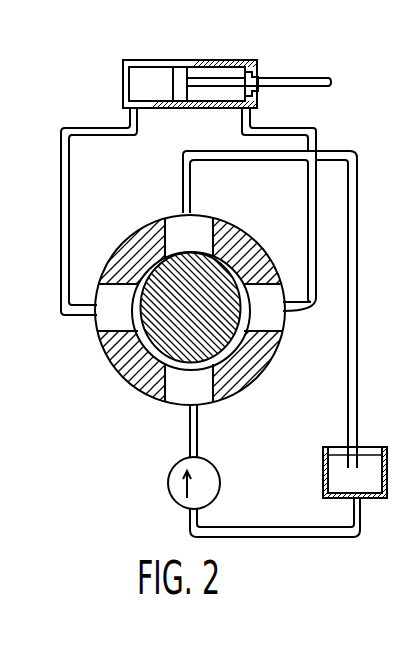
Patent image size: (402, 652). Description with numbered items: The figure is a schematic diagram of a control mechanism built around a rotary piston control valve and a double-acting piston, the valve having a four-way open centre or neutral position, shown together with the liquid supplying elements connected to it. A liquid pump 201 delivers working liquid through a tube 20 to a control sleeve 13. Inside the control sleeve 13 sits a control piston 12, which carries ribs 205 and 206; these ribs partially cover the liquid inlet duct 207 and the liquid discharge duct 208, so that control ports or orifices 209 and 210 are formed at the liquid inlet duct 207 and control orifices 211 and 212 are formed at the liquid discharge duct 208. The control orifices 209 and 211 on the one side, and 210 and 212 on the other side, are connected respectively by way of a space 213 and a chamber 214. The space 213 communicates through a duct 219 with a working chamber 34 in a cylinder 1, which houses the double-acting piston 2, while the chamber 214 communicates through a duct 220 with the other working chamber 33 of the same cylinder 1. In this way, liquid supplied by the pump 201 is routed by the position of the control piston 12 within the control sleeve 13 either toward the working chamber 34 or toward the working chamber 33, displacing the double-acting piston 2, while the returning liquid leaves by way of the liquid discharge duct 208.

The cylinder 1 is at (123, 82).
The double-acting piston 2 is at (182, 64).
The working chamber 33 is at (228, 67).
The working chamber 34 is at (146, 67).
The control piston 12 is at (150, 313).
The control sleeve 13 is at (100, 350).
The tube 20 is at (197, 443).
The liquid pump 201 is at (182, 507).
The rib 205 is at (220, 380).
The rib 206 is at (188, 252).
The liquid inlet duct 207 is at (185, 407).
The liquid discharge duct 208 is at (200, 222).
The control orifice 209 is at (153, 393).
The control orifice 210 is at (222, 360).
The control orifice 211 is at (168, 250).
The control orifice 212 is at (220, 238).
The space 213 is at (127, 370).
The chamber 214 is at (240, 397).
The duct 219 is at (62, 242).
The duct 220 is at (312, 134).